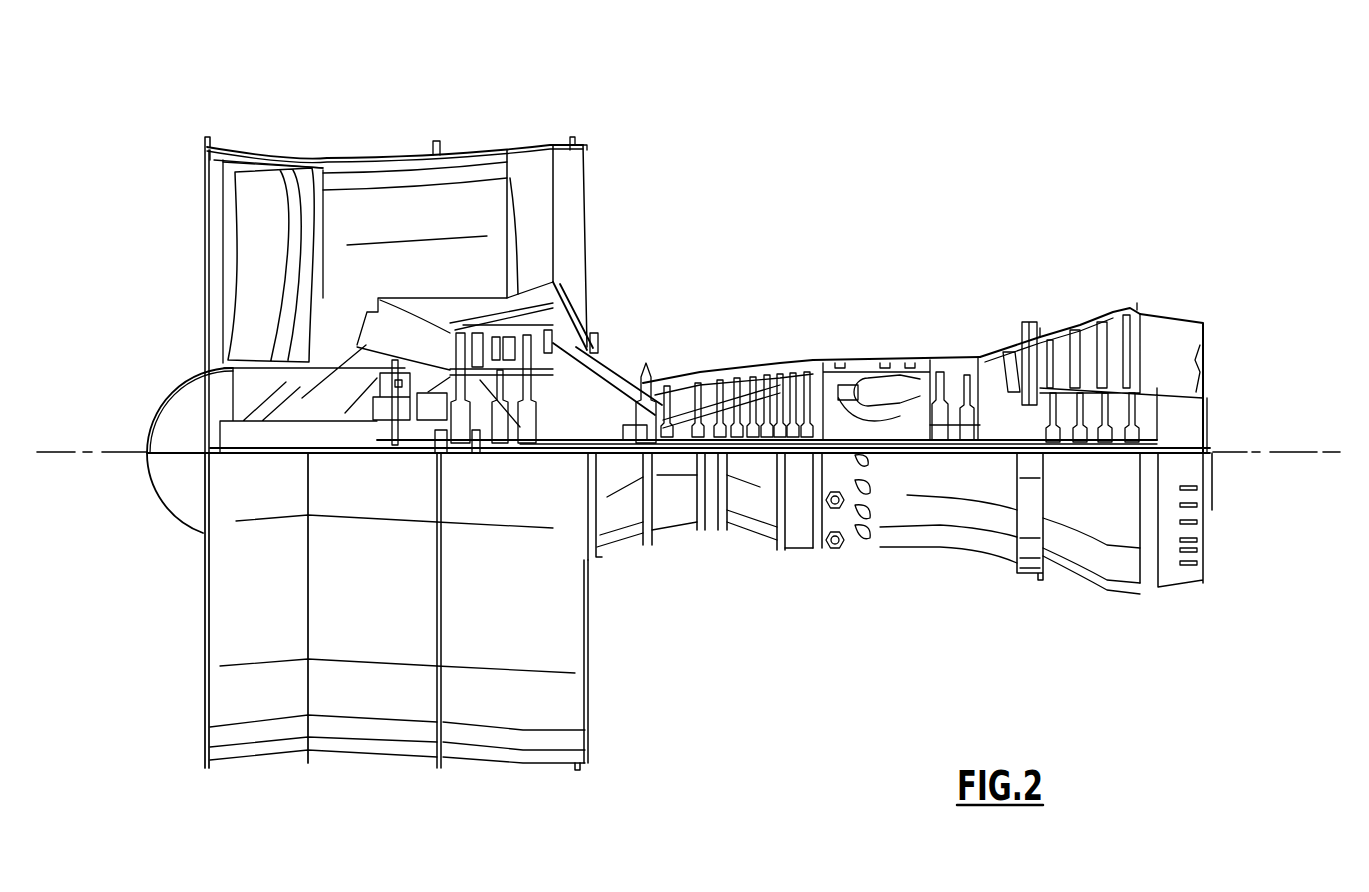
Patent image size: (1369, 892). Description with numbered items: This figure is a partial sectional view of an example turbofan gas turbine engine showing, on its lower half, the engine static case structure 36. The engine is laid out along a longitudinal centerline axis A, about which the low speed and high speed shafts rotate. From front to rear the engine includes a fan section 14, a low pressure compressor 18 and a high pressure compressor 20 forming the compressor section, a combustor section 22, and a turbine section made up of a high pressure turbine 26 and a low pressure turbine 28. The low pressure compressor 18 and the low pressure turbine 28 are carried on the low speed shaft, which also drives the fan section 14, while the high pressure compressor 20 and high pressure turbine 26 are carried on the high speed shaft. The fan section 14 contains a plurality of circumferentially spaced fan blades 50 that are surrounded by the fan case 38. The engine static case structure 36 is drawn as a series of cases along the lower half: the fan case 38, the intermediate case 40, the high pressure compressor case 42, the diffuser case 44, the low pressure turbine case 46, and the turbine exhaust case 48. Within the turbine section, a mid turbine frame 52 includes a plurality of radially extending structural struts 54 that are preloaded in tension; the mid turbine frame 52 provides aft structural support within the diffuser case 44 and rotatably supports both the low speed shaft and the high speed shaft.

The fan section 14 is at (377, 155).
The low pressure compressor 18 is at (647, 343).
The high pressure compressor 20 is at (808, 348).
The combustor section 22 is at (930, 350).
The high pressure turbine 26 is at (978, 350).
The low pressure turbine 28 is at (1137, 303).
The engine static case structure 36 is at (826, 688).
The fan case 38 is at (436, 780).
The intermediate case (IMC) 40 is at (652, 547).
The high pressure compressor case 42 is at (813, 560).
The diffuser case 44 is at (813, 558).
The low pressure turbine case 46 is at (1140, 602).
The turbine exhaust case 48 is at (1203, 602).
The fan blades 50 is at (250, 237).
The mid turbine frame (MTF) 52 is at (1032, 345).
The structural struts 54 is at (1013, 345).
The longitudinal centerline axis A is at (1292, 450).